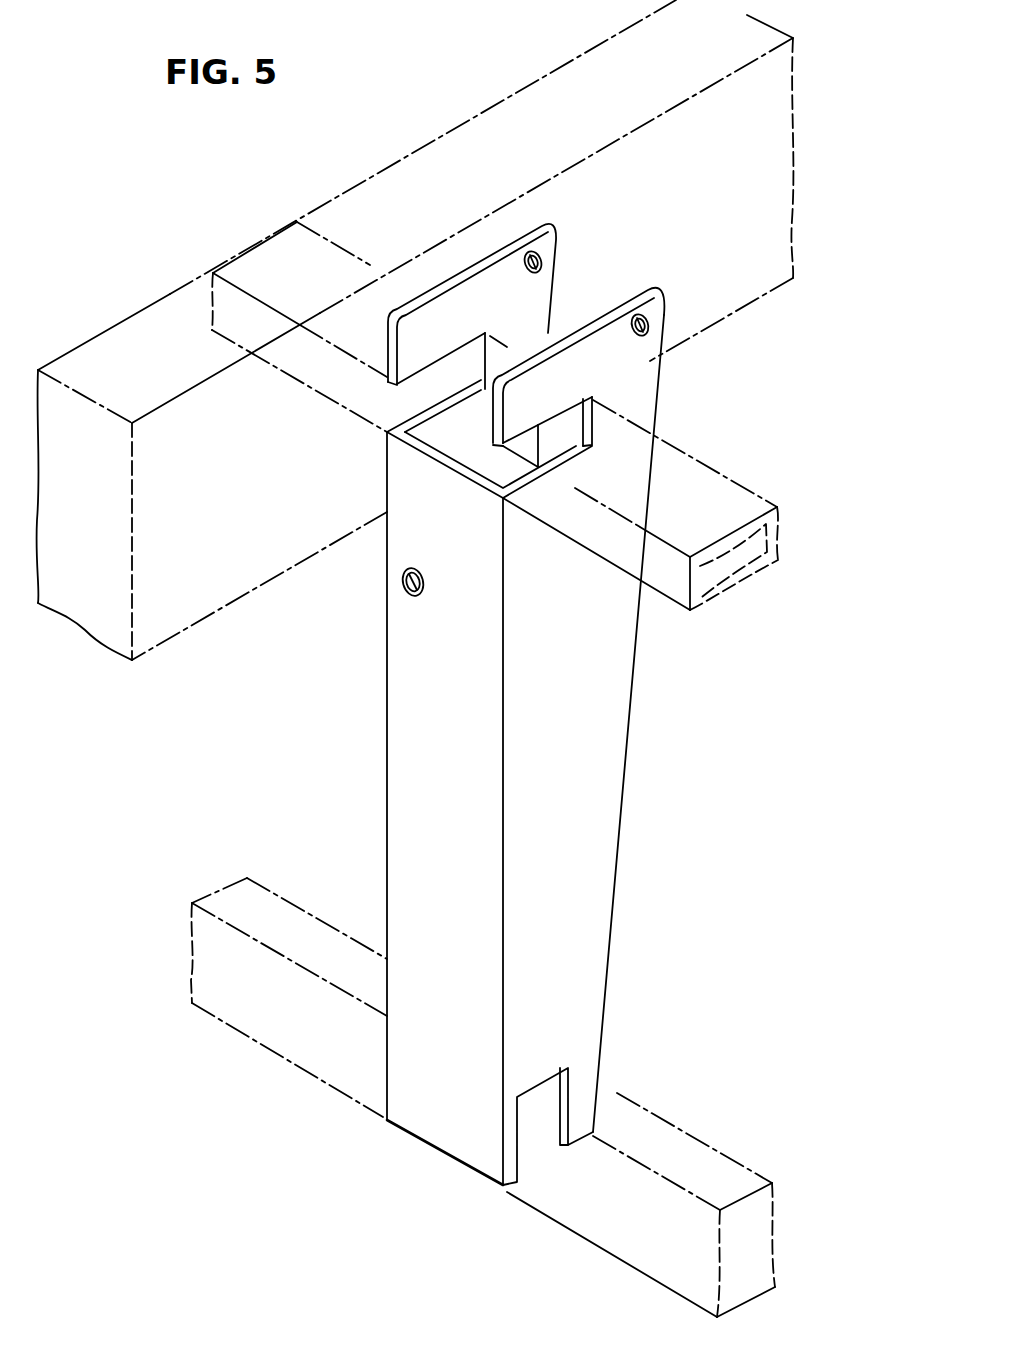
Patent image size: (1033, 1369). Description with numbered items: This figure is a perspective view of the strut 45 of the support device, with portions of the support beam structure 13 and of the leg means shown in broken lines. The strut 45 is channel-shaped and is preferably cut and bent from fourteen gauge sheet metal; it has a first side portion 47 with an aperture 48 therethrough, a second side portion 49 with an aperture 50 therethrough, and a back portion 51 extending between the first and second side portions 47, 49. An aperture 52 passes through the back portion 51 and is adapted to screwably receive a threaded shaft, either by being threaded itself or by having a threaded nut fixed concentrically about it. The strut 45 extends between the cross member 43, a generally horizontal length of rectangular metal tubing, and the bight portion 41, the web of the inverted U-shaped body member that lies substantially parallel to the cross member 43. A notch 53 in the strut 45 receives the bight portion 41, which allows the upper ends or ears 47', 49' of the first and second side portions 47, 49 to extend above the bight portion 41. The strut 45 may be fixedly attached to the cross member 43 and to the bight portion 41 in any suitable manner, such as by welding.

The support beam structure 13 is at (540, 103).
The bight portion 41 is at (790, 452).
The cross member 43 is at (678, 1160).
The strut 45 is at (406, 782).
The first side portion 47 is at (626, 346).
The ear of first side portion 47' is at (468, 256).
The aperture 48 is at (546, 266).
The second side portion 49 is at (605, 750).
The ear of second side portion 49' is at (612, 423).
The aperture 50 is at (644, 337).
The back portion 51 is at (412, 817).
The aperture 52 is at (405, 593).
The notch 53 is at (470, 440).